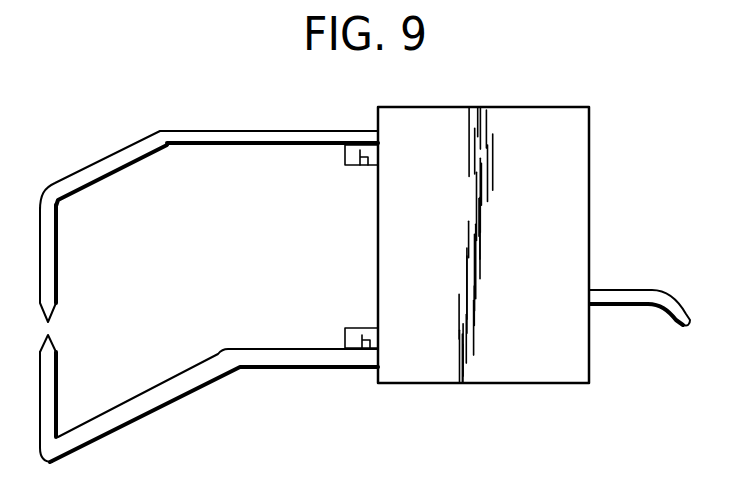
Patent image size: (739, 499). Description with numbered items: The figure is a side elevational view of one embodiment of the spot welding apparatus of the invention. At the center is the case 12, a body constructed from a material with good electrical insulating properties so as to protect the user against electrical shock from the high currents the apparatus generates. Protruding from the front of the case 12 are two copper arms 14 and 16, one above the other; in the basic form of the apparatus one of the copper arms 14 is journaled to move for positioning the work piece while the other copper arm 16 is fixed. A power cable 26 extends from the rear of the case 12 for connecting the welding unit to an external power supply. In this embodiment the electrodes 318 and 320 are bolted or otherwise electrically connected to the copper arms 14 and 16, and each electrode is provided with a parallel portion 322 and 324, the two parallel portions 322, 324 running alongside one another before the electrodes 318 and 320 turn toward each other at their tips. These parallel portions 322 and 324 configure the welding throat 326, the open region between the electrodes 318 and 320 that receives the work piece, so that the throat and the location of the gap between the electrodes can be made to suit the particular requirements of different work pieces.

The case 12 is at (589, 107).
The copper arm 14 is at (350, 166).
The copper arm 16 is at (362, 328).
The power cable 26 is at (636, 306).
The electrode 318 is at (58, 256).
The electrode 320 is at (60, 373).
The parallel portion 322 is at (103, 160).
The parallel portion 324 is at (152, 410).
The welding throat 326 is at (250, 270).